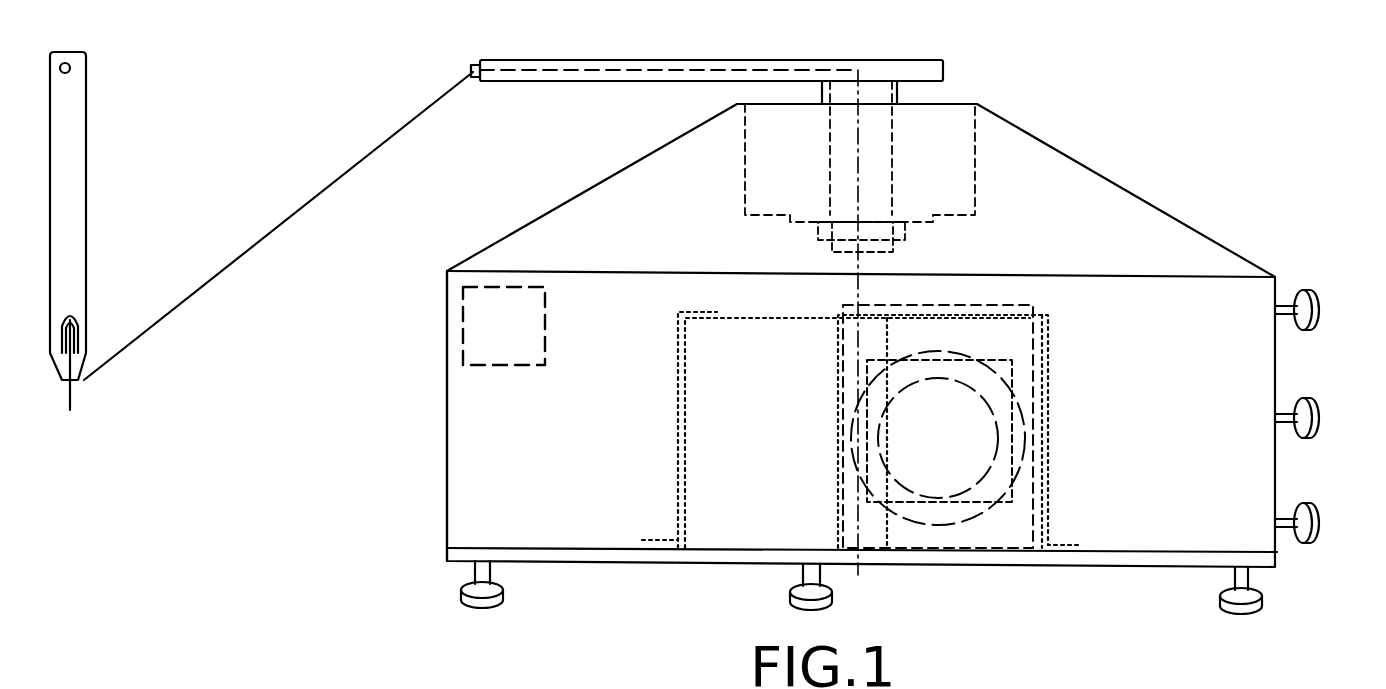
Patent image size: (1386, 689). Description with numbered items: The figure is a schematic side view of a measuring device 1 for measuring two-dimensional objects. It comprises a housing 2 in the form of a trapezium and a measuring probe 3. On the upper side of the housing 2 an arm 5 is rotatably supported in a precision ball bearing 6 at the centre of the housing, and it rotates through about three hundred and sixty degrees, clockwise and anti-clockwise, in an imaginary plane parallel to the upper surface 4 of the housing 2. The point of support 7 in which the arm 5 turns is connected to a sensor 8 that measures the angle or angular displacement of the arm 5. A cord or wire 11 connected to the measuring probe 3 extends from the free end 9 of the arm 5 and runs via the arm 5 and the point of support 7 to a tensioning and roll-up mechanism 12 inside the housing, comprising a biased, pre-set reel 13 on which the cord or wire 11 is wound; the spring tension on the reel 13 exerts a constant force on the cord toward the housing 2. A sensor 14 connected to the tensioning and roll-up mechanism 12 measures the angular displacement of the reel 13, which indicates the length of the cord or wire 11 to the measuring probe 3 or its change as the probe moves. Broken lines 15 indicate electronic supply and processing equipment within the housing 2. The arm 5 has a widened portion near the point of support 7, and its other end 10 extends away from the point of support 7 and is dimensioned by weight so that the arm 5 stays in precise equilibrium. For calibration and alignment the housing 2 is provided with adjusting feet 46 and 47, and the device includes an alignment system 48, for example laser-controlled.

The measuring device 1 is at (1012, 117).
The housing 2 is at (483, 457).
The measuring probe 3 is at (70, 130).
The upper surface 4 is at (960, 100).
The arm 5 is at (738, 62).
The precision ball bearing 6 is at (905, 236).
The point of support 7 is at (838, 152).
The sensor 8 is at (953, 163).
The free end 9 is at (490, 65).
The other end 10 is at (930, 68).
The cord or wire 11 is at (308, 200).
The tensioning and roll-up mechanism 12 is at (1017, 525).
The reel 13 is at (933, 505).
The sensor 14 is at (870, 500).
The broken lines 15 is at (740, 508).
The adjusting feet 46 is at (497, 600).
The adjusting feet 47 is at (1318, 326).
The alignment system 48 is at (493, 333).